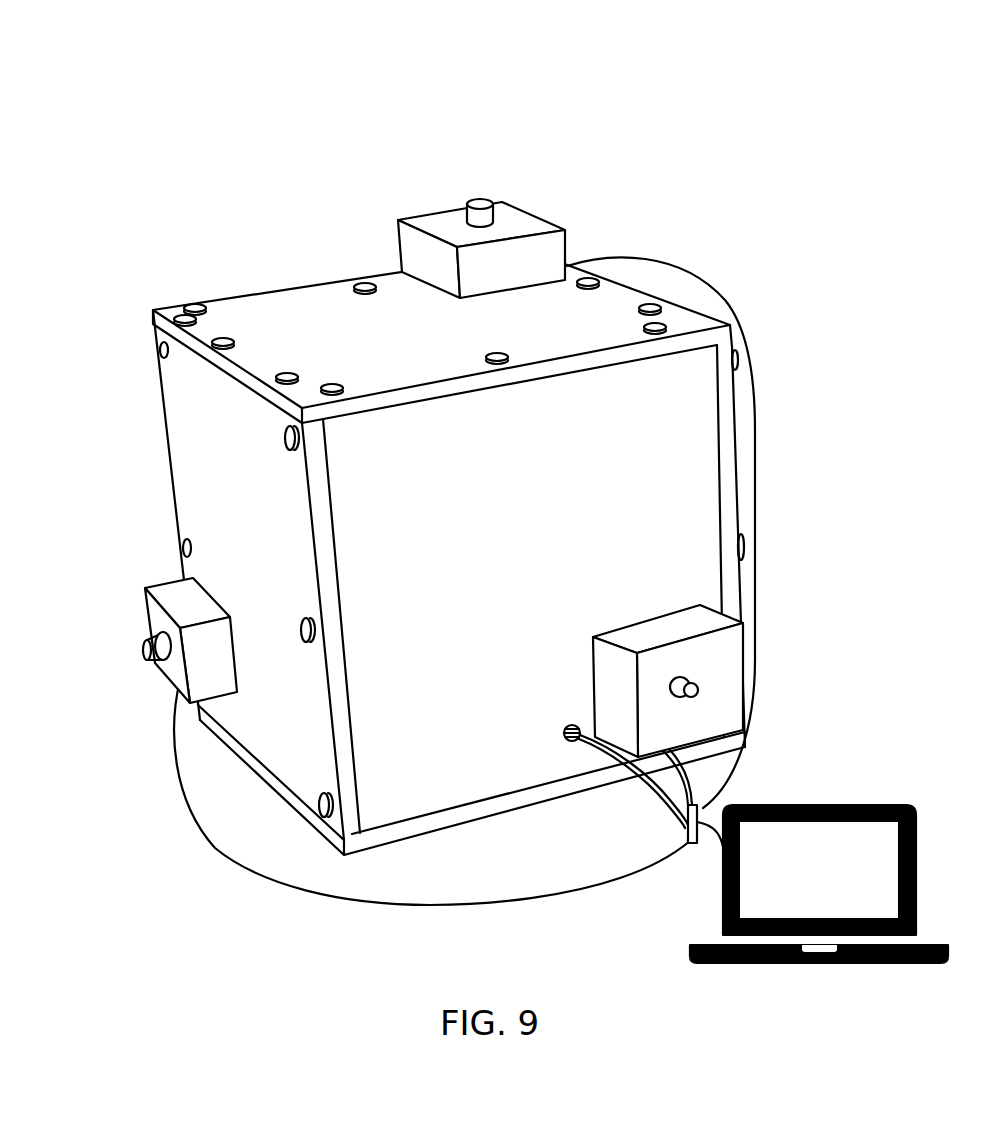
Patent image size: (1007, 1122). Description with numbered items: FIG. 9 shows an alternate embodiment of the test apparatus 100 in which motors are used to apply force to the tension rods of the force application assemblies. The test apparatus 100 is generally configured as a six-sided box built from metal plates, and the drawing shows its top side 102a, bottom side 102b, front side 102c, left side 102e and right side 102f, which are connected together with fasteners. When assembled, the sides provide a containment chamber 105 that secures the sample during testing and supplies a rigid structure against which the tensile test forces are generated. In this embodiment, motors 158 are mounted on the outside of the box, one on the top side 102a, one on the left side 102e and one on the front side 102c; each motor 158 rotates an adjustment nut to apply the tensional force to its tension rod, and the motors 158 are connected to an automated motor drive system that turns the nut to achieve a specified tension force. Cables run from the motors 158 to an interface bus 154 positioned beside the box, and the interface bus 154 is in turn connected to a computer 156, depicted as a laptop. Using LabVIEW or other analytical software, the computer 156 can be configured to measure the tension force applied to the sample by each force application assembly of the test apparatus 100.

The test apparatus 100 is at (207, 96).
The containment chamber 105 is at (102, 426).
The top side 102a is at (293, 313).
The bottom side 102b is at (388, 832).
The front side 102c is at (682, 490).
The left side 102e is at (190, 505).
The right side 102f is at (727, 427).
The interface bus 154 is at (688, 842).
The computer 156 is at (843, 805).
The motor 158 is at (433, 222).